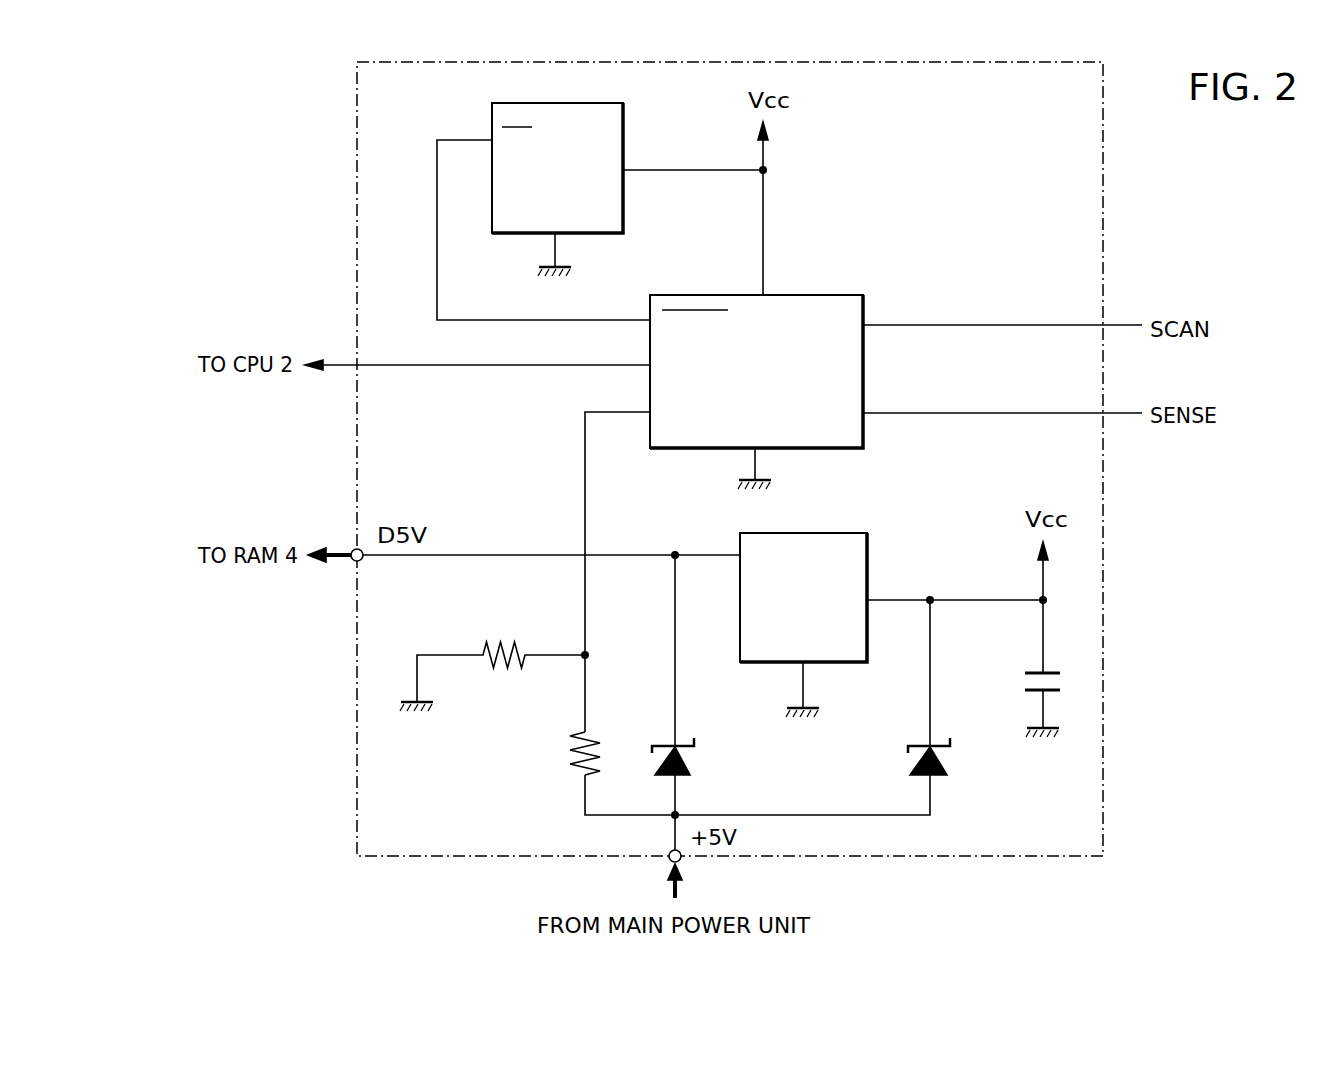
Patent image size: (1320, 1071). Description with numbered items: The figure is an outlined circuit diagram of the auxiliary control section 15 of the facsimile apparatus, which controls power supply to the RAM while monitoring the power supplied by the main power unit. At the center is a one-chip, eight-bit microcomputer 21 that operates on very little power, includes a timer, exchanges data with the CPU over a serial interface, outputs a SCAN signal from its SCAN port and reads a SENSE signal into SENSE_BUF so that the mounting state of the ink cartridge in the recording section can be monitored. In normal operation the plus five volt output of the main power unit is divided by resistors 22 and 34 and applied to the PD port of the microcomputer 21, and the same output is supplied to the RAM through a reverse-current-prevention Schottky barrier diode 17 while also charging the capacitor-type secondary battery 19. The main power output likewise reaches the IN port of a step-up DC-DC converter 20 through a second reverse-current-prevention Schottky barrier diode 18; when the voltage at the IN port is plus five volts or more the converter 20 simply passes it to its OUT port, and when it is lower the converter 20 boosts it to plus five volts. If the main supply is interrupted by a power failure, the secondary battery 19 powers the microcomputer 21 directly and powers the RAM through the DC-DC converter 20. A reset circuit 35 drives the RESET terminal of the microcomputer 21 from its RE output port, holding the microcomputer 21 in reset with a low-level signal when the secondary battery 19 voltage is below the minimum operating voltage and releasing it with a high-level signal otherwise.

The auxiliary control section 15 is at (1103, 203).
The reverse-current-prevention Schottky barrier diode 17 is at (690, 765).
The reverse-current-prevention Schottky barrier diode 18 is at (947, 768).
The capacitor-type secondary battery 19 is at (1022, 680).
The step-up DC-DC converter 20 is at (833, 533).
The one-chip microcomputer 21 is at (812, 295).
The resistor 22 is at (506, 640).
The resistor 34 is at (573, 762).
The reset circuit 35 is at (624, 132).